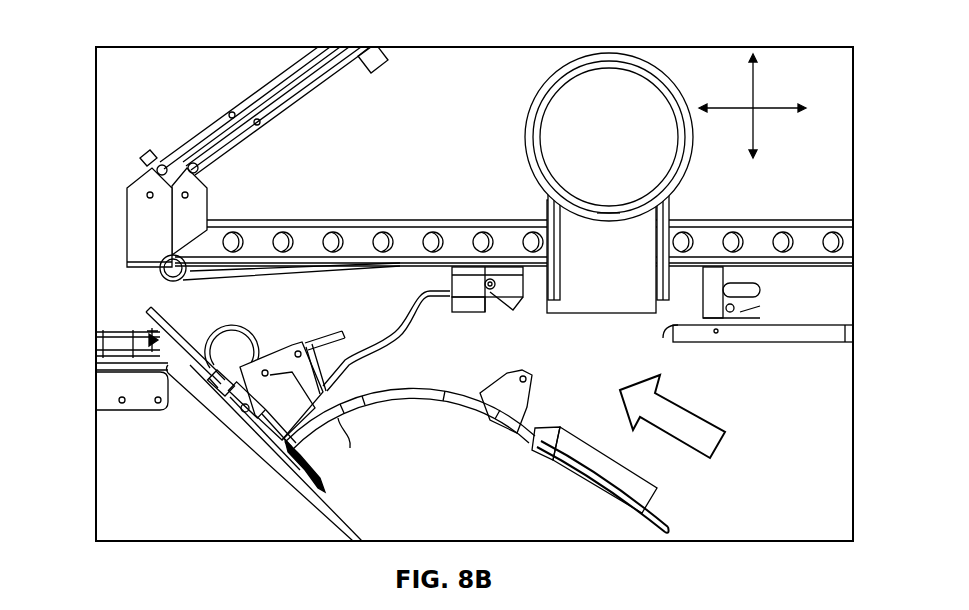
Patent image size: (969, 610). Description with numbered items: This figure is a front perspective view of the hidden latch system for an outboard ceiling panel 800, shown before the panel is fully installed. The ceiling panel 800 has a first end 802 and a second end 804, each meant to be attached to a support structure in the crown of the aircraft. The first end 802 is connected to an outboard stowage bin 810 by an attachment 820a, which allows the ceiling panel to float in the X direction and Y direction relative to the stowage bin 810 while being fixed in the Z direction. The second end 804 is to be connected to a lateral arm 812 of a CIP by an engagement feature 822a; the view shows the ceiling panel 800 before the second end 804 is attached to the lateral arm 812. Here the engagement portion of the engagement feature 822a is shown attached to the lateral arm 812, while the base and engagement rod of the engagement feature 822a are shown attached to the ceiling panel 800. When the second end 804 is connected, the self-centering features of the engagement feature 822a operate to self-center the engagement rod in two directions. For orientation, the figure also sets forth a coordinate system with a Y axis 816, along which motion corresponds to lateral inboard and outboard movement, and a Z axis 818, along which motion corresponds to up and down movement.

The outboard ceiling panel 800 is at (425, 398).
The first end 802 is at (333, 425).
The second end 804 is at (500, 432).
The outboard stowage bin 810 is at (122, 455).
The lateral arm 812 is at (333, 219).
The Y axis 816 is at (773, 108).
The Z axis 818 is at (750, 83).
The attachment 820a is at (298, 348).
The engagement feature 822a is at (456, 322).